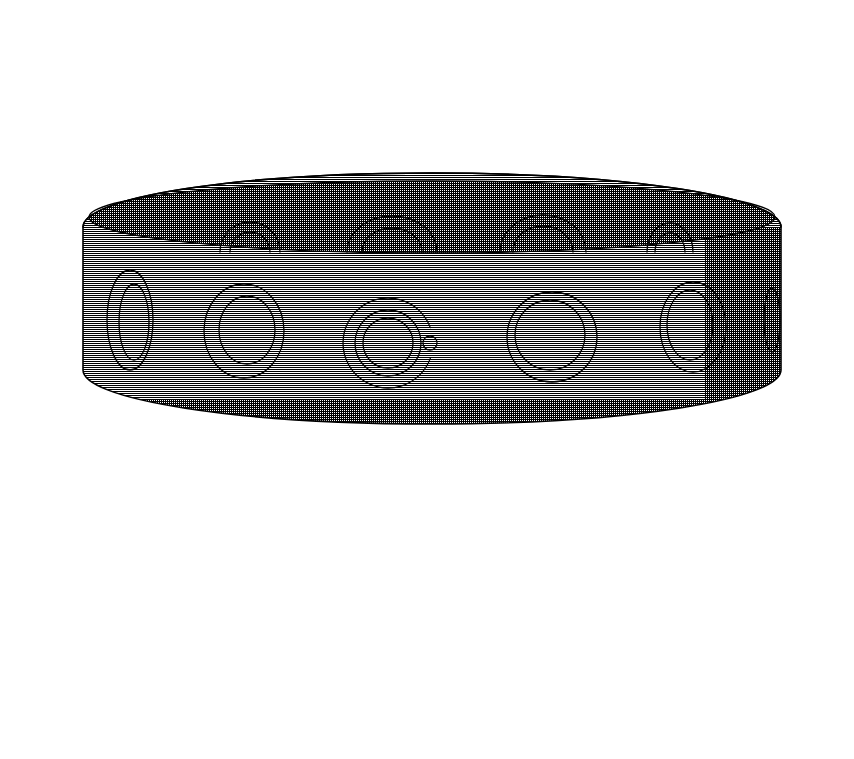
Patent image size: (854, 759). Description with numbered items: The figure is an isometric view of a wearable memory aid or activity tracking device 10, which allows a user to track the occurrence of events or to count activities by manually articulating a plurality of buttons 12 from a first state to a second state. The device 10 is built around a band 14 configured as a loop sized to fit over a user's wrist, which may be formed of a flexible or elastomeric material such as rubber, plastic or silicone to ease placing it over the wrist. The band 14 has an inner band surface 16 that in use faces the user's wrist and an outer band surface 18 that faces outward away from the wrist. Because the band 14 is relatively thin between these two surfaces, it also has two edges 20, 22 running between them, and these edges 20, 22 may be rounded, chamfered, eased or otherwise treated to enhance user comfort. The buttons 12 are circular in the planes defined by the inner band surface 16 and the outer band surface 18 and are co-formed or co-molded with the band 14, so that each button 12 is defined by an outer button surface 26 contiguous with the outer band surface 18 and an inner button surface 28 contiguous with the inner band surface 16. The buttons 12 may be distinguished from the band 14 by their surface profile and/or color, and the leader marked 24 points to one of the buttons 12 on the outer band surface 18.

The wearable memory aid or activity tracking device 10 is at (196, 146).
The buttons 12 is at (600, 388).
The band 14 is at (195, 430).
The inner band surface 16 is at (468, 221).
The outer band surface 18 is at (450, 377).
The edge 20 is at (686, 190).
The edge 22 is at (148, 410).
The button 24 is at (540, 380).
The outer button surface 26 is at (252, 345).
The inner button surface 28 is at (350, 241).